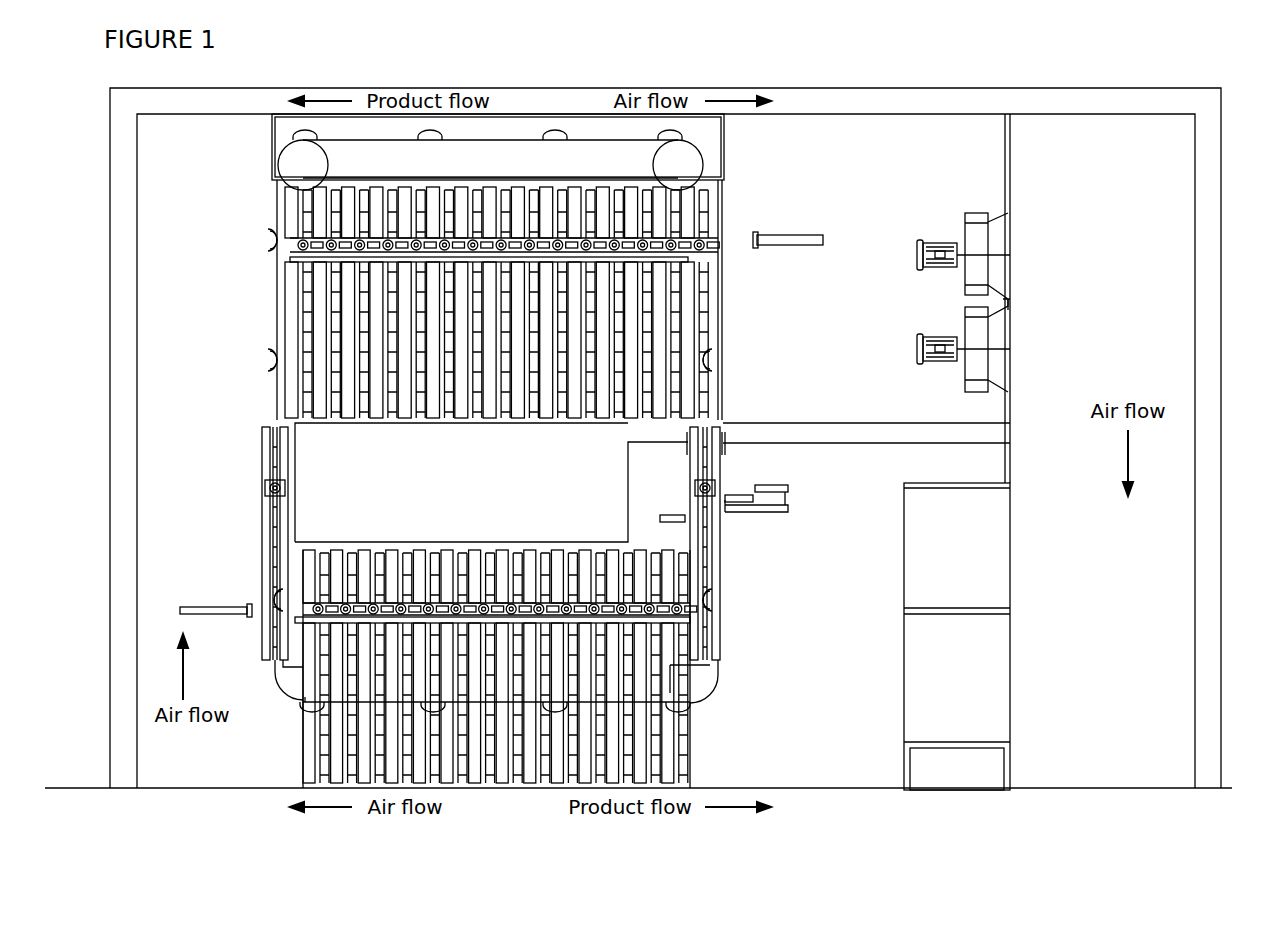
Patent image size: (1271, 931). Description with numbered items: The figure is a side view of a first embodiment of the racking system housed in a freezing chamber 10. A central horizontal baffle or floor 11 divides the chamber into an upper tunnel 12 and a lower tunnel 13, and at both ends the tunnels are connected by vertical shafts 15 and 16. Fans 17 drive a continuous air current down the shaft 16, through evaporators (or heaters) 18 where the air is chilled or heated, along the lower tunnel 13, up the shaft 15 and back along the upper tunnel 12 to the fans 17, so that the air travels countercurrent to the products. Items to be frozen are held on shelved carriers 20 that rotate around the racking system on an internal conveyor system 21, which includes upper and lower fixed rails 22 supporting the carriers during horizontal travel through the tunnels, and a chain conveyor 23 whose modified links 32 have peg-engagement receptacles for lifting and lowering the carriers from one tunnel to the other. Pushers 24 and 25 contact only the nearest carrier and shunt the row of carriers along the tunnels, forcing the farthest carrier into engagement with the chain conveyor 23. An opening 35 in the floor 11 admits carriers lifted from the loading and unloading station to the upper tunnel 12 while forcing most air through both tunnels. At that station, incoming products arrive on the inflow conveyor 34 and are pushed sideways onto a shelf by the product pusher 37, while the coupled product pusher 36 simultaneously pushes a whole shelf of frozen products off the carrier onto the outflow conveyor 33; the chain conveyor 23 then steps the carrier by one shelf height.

The freezing chamber 10 is at (862, 100).
The central horizontal baffle or floor 11 is at (478, 487).
The upper tunnel 12 is at (232, 227).
The lower tunnel 13 is at (205, 682).
The vertical shaft 15 is at (185, 501).
The vertical shaft 16 is at (1115, 579).
The fans 17 is at (978, 242).
The evaporators (or heaters) 18 is at (947, 557).
The carriers 20 is at (722, 290).
The internal conveyor system 21 is at (276, 186).
The fixed rails 22 is at (298, 258).
The chain conveyor 23 is at (277, 420).
The pusher 24 is at (778, 236).
The pusher 25 is at (231, 607).
The links 32 is at (266, 358).
The outflow conveyor 33 is at (656, 518).
The inflow conveyor 34 is at (738, 495).
The opening 35 is at (832, 423).
The product pusher 36 is at (772, 512).
The product pusher 37 is at (778, 485).